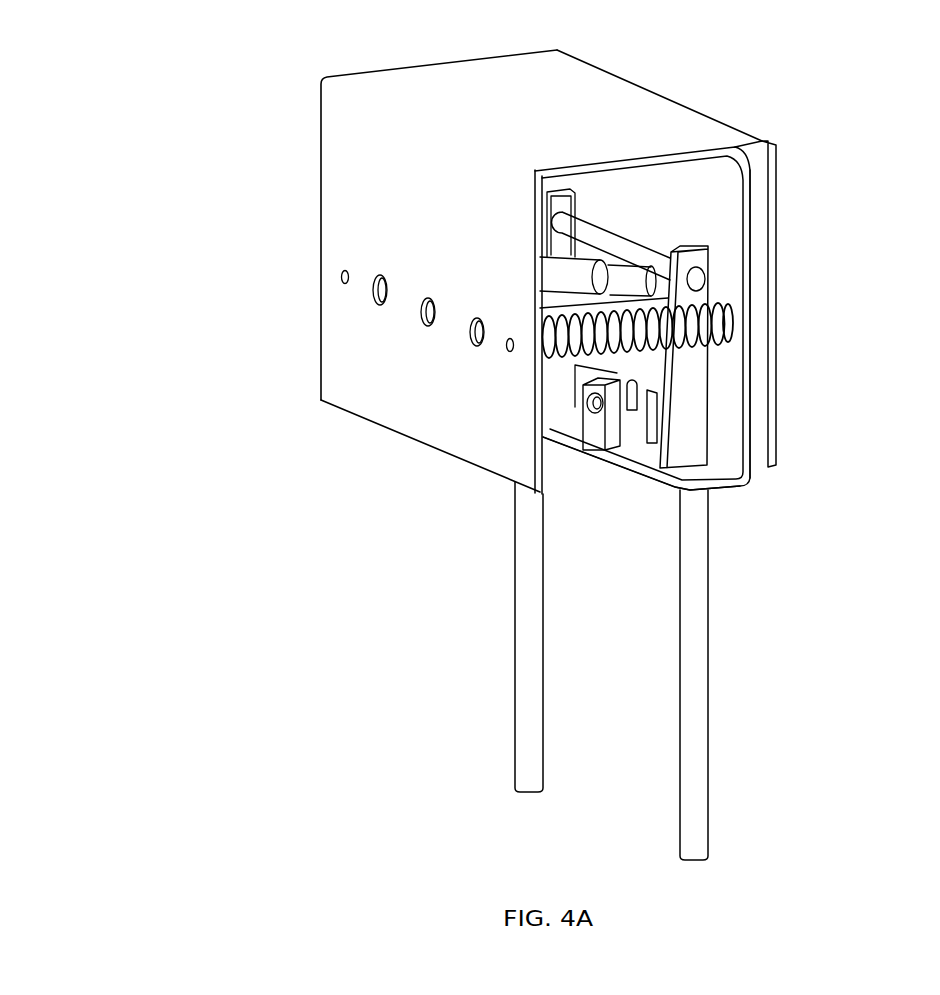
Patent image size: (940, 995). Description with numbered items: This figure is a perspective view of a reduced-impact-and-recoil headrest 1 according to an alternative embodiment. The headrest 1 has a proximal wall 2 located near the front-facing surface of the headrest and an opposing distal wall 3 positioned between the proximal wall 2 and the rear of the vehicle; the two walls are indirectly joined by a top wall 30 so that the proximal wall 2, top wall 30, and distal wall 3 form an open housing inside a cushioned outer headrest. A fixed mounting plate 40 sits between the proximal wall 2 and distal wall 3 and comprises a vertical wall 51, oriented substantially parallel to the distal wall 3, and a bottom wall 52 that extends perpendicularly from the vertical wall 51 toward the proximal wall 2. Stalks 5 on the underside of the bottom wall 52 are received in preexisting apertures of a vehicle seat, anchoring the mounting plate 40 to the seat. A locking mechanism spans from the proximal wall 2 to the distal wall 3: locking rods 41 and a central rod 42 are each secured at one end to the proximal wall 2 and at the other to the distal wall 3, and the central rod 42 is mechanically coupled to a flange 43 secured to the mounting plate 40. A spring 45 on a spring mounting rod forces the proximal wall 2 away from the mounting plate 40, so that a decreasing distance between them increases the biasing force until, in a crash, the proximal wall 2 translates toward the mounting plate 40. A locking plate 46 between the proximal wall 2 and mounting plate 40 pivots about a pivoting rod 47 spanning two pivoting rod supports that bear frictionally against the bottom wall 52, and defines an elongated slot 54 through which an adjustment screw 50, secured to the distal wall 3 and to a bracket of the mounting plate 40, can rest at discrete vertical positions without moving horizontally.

The reduced-impact-and-recoil headrest 1 is at (213, 108).
The proximal wall 2 is at (340, 232).
The distal wall 3 is at (778, 368).
The stalks 5 is at (513, 640).
The top wall 30 is at (470, 70).
The fixed mounting plate 40 is at (727, 190).
The locking rods 41 is at (557, 262).
The central rod 42 is at (547, 290).
The flange 43 is at (610, 290).
The spring 45 is at (550, 357).
The locking plate 46 is at (650, 373).
The pivoting rod 47 is at (630, 242).
The adjustment screw 50 is at (590, 413).
The vertical wall 51 is at (753, 228).
The bottom wall 52 is at (730, 487).
The slot 54 is at (630, 407).